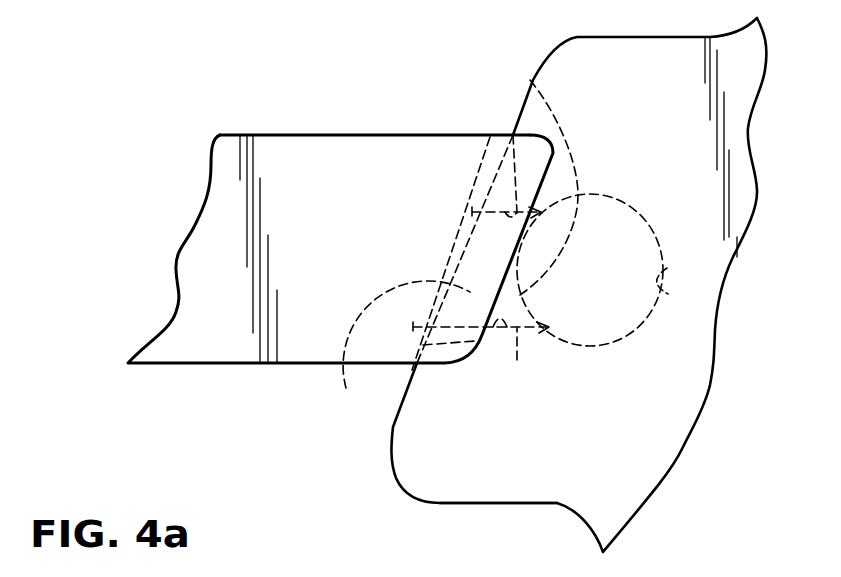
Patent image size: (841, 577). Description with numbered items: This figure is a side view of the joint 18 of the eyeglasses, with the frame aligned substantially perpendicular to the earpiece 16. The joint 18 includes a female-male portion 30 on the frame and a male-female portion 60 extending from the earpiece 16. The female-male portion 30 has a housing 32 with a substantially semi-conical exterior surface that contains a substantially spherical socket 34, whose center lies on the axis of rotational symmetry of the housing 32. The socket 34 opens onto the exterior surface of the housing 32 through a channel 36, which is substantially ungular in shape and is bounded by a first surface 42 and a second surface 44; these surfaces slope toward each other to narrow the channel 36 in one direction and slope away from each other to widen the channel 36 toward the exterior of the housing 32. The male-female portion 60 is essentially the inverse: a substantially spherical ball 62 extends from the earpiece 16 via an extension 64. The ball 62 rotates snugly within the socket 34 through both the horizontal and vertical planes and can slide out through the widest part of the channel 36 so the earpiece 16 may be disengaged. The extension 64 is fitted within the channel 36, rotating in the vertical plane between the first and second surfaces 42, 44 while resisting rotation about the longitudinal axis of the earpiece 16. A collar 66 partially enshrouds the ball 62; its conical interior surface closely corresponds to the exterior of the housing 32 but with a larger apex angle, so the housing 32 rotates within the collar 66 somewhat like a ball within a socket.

The earpiece 16 is at (213, 363).
The joint 18 is at (432, 66).
The female-male portion 30 is at (580, 368).
The housing 32 is at (440, 504).
The socket 34 is at (655, 290).
The channel 36 is at (527, 77).
The first surface 42 is at (513, 135).
The second surface 44 is at (517, 360).
The male-female portion 60 is at (415, 403).
The ball 62 is at (620, 243).
The extension 64 is at (395, 349).
The collar 66 is at (488, 134).